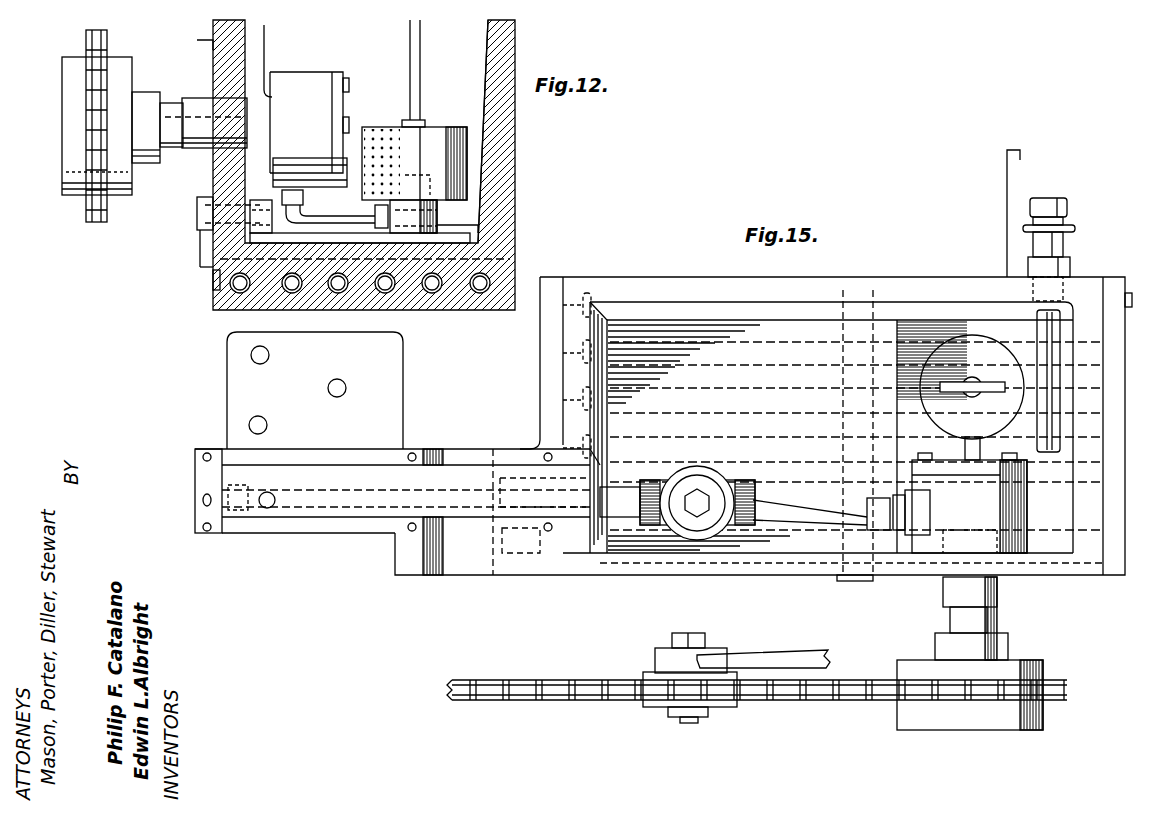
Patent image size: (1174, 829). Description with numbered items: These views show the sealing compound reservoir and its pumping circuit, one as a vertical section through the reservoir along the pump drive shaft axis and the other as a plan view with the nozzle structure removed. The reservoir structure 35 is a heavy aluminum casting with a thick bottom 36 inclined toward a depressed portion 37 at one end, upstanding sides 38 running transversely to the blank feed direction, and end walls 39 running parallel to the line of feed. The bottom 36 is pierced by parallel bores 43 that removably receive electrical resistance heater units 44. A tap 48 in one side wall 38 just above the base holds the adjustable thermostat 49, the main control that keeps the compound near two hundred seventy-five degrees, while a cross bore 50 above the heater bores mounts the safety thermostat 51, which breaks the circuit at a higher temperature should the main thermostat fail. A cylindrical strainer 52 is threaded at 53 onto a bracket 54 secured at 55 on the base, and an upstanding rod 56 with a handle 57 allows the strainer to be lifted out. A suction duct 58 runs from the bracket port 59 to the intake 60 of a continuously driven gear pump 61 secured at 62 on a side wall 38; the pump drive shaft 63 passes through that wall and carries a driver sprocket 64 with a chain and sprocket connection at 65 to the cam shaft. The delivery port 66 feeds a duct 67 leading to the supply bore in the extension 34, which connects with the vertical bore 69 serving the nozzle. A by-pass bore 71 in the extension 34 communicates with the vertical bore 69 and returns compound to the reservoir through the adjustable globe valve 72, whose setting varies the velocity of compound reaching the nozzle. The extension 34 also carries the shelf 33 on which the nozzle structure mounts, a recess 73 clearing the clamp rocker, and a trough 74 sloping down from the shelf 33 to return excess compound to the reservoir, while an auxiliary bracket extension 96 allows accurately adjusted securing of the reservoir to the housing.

In FIG. 15, the shelf 33 is at (208, 533).
In FIG. 15, the extension 34 is at (342, 533).
In FIG. 12, the sealing compound reservoir structure 35 is at (517, 150).
In FIG. 15, the sealing compound reservoir structure 35 is at (672, 277).
In FIG. 12, the bottom 36 is at (450, 300).
In FIG. 15, the bottom 36 is at (640, 332).
In FIG. 12, the depressed portion 37 is at (420, 245).
In FIG. 15, the depressed portion 37 is at (940, 320).
In FIG. 12, the sides 38 is at (213, 172).
In FIG. 15, the sides 38 is at (895, 270).
In FIG. 12, the end walls 39 is at (500, 50).
In FIG. 15, the end walls 39 is at (563, 375).
In FIG. 12, the bores 43 is at (243, 293).
In FIG. 15, the bores 43 is at (723, 380).
In FIG. 12, the heater units 44 is at (230, 290).
In FIG. 15, the heater units 44 is at (780, 395).
In FIG. 15, the tap 48 is at (1065, 290).
In FIG. 15, the adjustable thermostat 49 is at (1055, 340).
In FIG. 12, the cross bore 50 is at (338, 295).
In FIG. 15, the cross bore 50 is at (843, 402).
In FIG. 12, the safety thermostat 51 is at (385, 295).
In FIG. 15, the safety thermostat 51 is at (860, 448).
In FIG. 12, the cylindrical strainer 52 is at (452, 125).
In FIG. 15, the cylindrical strainer 52 is at (1024, 422).
In FIG. 12, the threaded mounting 53 is at (440, 173).
In FIG. 12, the bracket 54 is at (440, 212).
In FIG. 12, the securing point 55 is at (470, 235).
In FIG. 12, the upstanding rod 56 is at (421, 60).
In FIG. 15, the handle 57 is at (980, 378).
In FIG. 12, the suction duct 58 is at (350, 208).
In FIG. 15, the suction duct 58 is at (965, 450).
In FIG. 12, the bracket port 59 is at (440, 190).
In FIG. 12, the intake 60 is at (300, 158).
In FIG. 12, the gear pump 61 is at (295, 75).
In FIG. 15, the gear pump 61 is at (1008, 504).
In FIG. 12, the pump mounting 62 is at (197, 214).
In FIG. 15, the pump mounting 62 is at (945, 588).
In FIG. 12, the drive shaft 63 is at (228, 113).
In FIG. 12, the driver sprocket 64 is at (132, 65).
In FIG. 15, the driver sprocket 64 is at (1045, 675).
In FIG. 12, the chain and sprocket connection 65 is at (84, 212).
In FIG. 15, the chain and sprocket connection 65 is at (848, 698).
In FIG. 15, the delivery port 66 is at (912, 515).
In FIG. 15, the duct 67 is at (815, 508).
In FIG. 15, the vertical bore 69 is at (266, 508).
In FIG. 15, the by-pass bore 71 is at (400, 510).
In FIG. 15, the adjustable globe valve 72 is at (705, 465).
In FIG. 15, the recess 73 is at (440, 449).
In FIG. 15, the trough 74 is at (352, 475).
In FIG. 15, the auxiliary bracket extension 96 is at (403, 408).